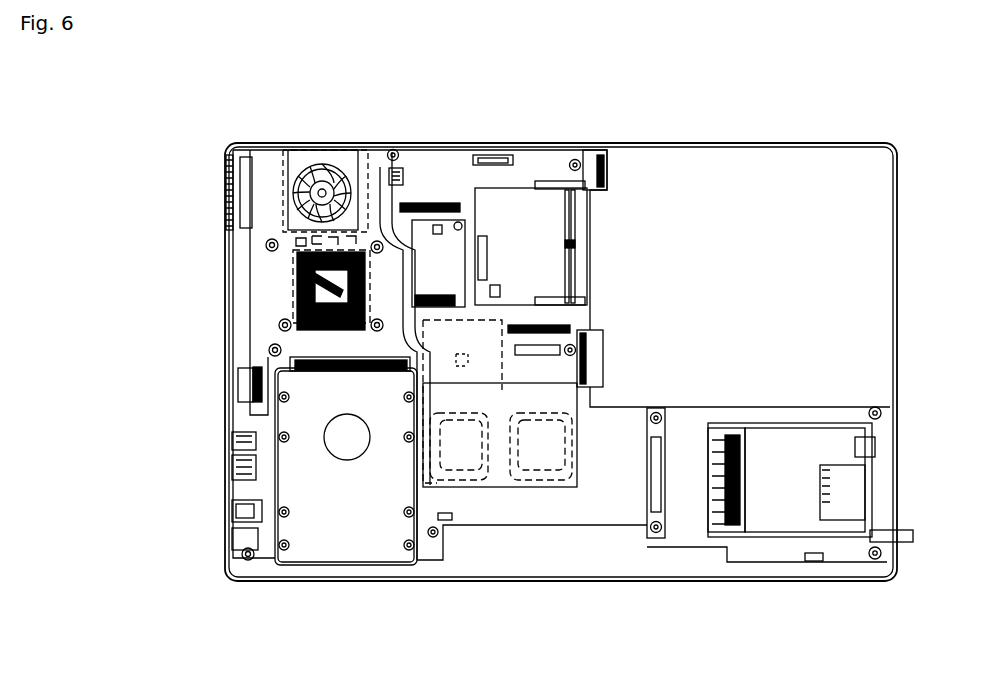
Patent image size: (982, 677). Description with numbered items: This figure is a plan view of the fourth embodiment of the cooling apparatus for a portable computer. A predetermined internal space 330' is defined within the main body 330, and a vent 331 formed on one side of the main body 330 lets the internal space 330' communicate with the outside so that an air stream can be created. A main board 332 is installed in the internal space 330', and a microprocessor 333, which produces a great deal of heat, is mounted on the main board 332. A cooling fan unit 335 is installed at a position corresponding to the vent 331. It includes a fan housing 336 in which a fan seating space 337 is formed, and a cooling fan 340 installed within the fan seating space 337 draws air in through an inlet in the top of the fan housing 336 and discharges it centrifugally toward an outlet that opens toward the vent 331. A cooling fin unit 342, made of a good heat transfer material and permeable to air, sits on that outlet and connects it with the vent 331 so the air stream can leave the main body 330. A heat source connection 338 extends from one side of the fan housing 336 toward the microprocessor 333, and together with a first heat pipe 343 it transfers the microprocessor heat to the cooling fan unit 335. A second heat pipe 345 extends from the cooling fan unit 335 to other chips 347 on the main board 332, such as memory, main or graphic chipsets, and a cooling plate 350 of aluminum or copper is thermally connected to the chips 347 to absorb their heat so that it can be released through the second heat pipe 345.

The main body 330 is at (561, 333).
The internal space 330' is at (750, 277).
The vent 331 is at (297, 170).
The main board 332 is at (455, 158).
The microprocessor 333 is at (271, 354).
The cooling fan unit 335 is at (316, 132).
The fan housing 336 is at (283, 148).
The fan seating space 337 is at (237, 193).
The heat source connection 338 is at (297, 282).
The cooling fan 340 is at (332, 180).
The cooling fin unit 342 is at (247, 145).
The first heat pipe 343 is at (297, 270).
The second heat pipe 345 is at (374, 147).
The chip 347 is at (542, 487).
The cooling plate 350 is at (572, 487).